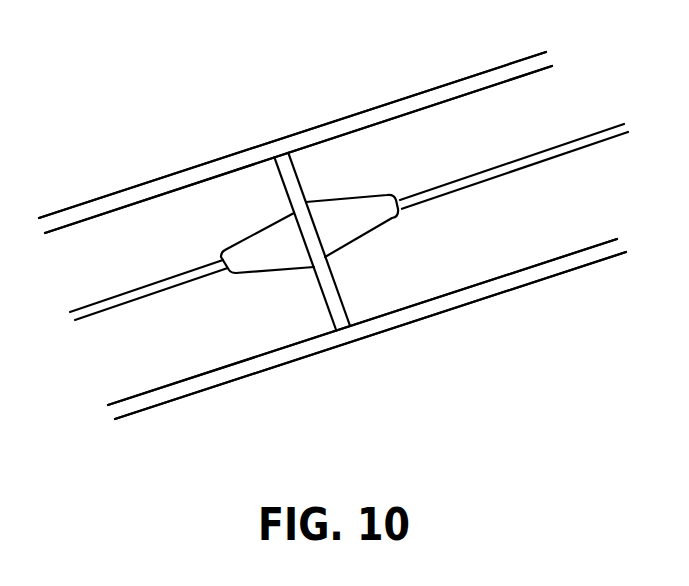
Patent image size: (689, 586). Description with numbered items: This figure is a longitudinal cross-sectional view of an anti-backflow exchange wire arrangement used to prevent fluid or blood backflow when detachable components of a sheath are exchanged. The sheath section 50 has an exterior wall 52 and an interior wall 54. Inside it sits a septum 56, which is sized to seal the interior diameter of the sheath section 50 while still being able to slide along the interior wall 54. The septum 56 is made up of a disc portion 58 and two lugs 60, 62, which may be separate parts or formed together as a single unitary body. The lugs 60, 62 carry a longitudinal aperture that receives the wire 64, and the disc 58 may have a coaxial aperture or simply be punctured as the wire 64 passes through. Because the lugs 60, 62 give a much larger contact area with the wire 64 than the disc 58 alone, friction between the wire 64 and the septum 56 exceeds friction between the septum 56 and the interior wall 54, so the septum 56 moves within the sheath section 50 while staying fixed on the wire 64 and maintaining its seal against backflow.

The sheath section 50 is at (127, 187).
The exterior wall 52 is at (329, 120).
The interior wall 54 is at (480, 94).
The septum 56 is at (358, 267).
The disc portion 58 is at (290, 233).
The lug 60 is at (347, 210).
The lug 62 is at (260, 233).
The wire 64 is at (516, 175).